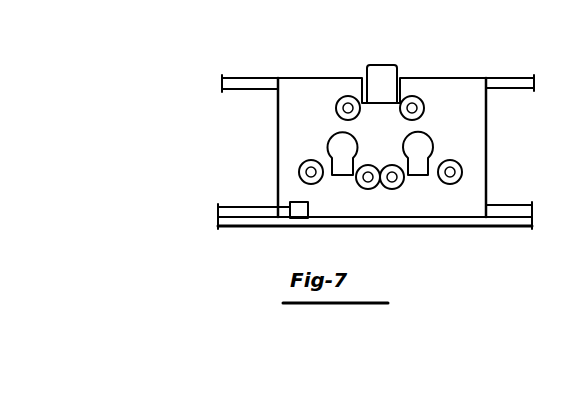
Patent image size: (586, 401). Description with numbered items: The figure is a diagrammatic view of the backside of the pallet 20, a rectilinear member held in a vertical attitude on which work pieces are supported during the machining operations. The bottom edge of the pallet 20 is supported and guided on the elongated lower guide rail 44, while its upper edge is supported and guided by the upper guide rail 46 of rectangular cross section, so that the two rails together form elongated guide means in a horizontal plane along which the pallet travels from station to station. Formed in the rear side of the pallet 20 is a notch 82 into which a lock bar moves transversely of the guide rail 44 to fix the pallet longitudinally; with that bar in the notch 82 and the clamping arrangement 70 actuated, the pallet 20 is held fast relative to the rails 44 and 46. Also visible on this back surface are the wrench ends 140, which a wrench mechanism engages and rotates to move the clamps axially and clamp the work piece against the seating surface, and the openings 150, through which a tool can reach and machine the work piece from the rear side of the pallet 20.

The pallet 20 is at (437, 82).
The guide rail 44 is at (228, 213).
The upper guide rail 46 is at (500, 77).
The clamping arrangement 70 is at (385, 70).
The notch 82 is at (295, 215).
The wrench ends 140 is at (350, 96).
The openings 150 is at (330, 146).